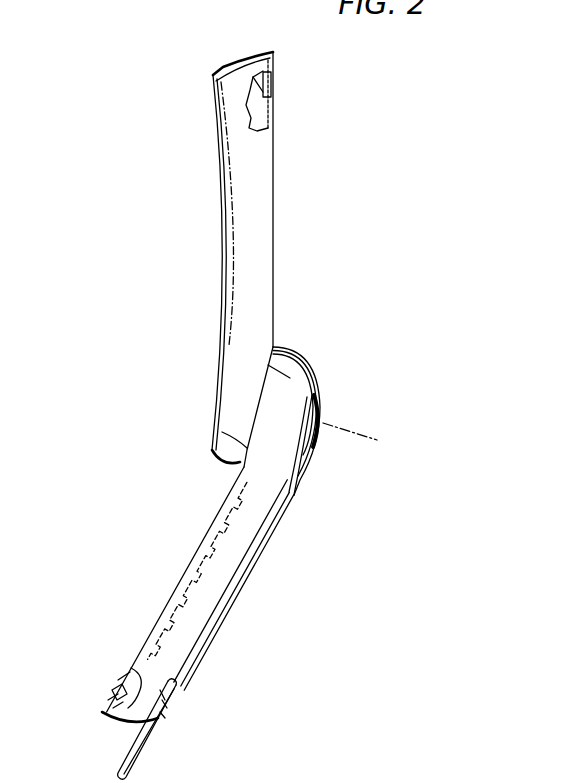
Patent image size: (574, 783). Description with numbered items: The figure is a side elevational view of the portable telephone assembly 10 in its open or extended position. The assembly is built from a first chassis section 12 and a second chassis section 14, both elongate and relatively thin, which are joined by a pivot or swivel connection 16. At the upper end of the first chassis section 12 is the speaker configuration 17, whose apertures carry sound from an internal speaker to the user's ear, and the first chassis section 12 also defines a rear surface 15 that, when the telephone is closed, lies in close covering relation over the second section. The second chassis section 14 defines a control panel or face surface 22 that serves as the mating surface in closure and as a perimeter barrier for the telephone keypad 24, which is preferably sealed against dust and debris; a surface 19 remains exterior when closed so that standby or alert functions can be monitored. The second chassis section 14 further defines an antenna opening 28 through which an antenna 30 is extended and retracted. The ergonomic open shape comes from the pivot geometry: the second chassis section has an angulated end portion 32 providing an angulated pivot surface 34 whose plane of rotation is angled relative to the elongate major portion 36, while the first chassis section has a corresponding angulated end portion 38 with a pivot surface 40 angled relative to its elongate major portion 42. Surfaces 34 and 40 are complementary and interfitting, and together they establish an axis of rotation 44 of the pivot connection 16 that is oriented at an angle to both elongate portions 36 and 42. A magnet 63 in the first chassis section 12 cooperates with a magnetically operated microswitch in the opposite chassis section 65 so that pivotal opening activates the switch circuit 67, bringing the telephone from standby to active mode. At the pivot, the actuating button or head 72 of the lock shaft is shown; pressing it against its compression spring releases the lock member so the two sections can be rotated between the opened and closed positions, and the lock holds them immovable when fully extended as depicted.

The portable telephone assembly 10 is at (192, 344).
The first chassis section 12 is at (276, 178).
The second chassis section 14 is at (220, 618).
The rear surface 15 is at (276, 299).
The pivot or swivel connection 16 is at (333, 372).
The speaker configuration 17 is at (215, 129).
The surface 19 is at (227, 281).
The control panel or face surface 22 is at (152, 628).
The telephone keypad 24 is at (177, 581).
The antenna opening 28 is at (178, 684).
The antenna 30 is at (142, 747).
The angulated end portion 32 is at (289, 362).
The angulated pivot surface 34 is at (258, 393).
The elongate major portion 36 is at (248, 530).
The angulated end portion 38 is at (210, 440).
The pivot surface 40 is at (230, 455).
The elongate major portion 42 is at (262, 247).
The axis of rotation 44 is at (377, 440).
The magnet 63 is at (253, 77).
The opposite chassis section 65 is at (117, 683).
The switch circuit 67 is at (110, 720).
The actuating button or head 72 is at (282, 414).